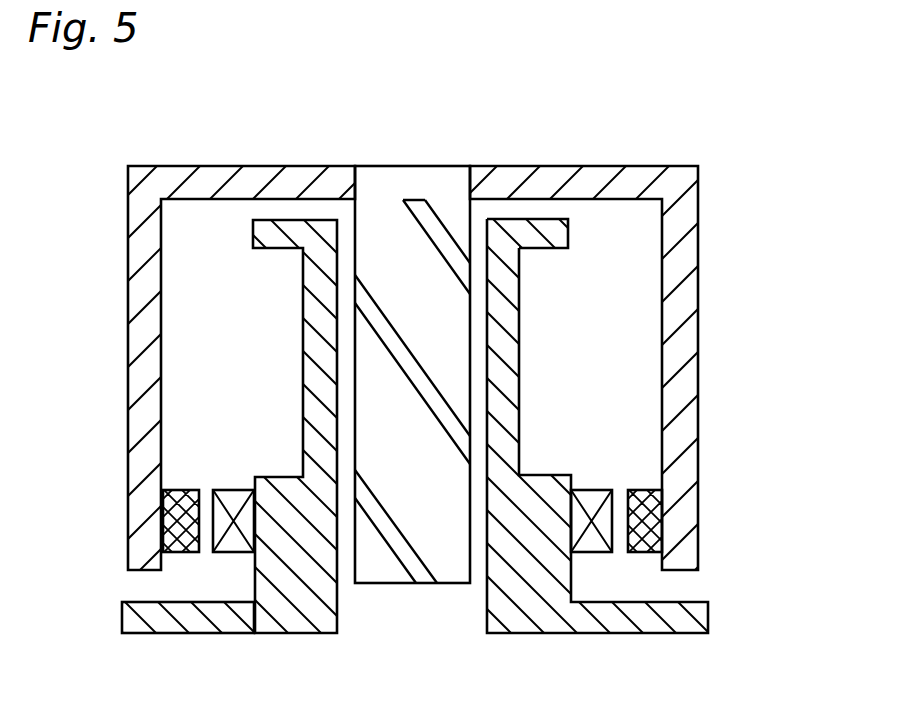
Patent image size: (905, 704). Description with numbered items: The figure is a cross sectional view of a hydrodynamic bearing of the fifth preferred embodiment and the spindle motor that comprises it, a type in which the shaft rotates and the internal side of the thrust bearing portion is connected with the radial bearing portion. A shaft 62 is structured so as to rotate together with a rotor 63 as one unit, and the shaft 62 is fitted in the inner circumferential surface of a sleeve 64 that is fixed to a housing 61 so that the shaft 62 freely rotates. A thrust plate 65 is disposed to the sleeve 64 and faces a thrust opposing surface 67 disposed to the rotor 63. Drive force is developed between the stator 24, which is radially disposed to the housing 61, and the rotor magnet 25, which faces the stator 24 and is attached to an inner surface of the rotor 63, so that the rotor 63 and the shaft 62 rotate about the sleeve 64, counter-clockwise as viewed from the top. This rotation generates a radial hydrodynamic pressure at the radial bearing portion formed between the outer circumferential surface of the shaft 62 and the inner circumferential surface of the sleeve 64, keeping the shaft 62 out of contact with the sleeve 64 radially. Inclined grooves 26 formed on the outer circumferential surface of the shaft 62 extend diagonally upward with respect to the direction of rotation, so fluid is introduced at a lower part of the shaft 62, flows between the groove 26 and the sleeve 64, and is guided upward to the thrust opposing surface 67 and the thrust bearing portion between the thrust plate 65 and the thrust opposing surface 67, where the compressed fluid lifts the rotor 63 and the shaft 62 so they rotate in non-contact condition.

The stator 24 is at (596, 497).
The rotor magnet 25 is at (652, 517).
The inclined groove 26 is at (394, 362).
The housing 61 is at (250, 615).
The shaft 62 is at (382, 195).
The rotor 63 is at (248, 187).
The sleeve 64 is at (509, 383).
The thrust plate 65 is at (541, 233).
The thrust opposing surface 67 is at (517, 199).